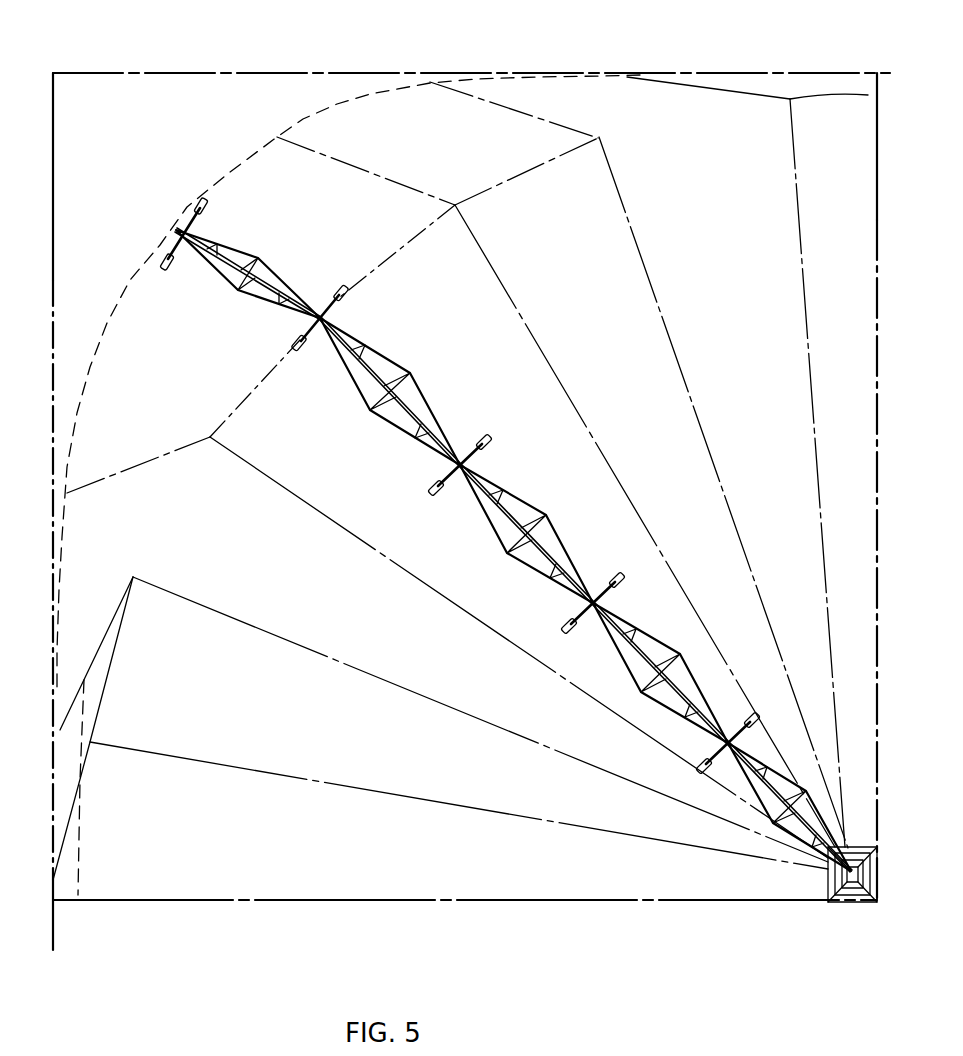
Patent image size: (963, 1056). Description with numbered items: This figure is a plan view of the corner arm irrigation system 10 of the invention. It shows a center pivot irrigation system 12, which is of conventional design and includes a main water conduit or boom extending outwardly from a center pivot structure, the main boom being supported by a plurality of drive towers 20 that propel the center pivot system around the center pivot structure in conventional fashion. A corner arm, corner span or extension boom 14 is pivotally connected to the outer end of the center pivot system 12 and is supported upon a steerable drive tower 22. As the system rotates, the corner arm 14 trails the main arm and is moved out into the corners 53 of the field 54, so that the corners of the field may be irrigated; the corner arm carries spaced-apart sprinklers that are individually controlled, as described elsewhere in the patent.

The deployable truss beam 10 is at (488, 572).
The center pivot irrigation system 12 is at (800, 240).
The corner arm irrigation system 14 is at (680, 86).
The drive towers 20 is at (425, 477).
The steerable drive tower 22 is at (190, 270).
The corners 53 is at (160, 120).
The field 54 is at (52, 135).